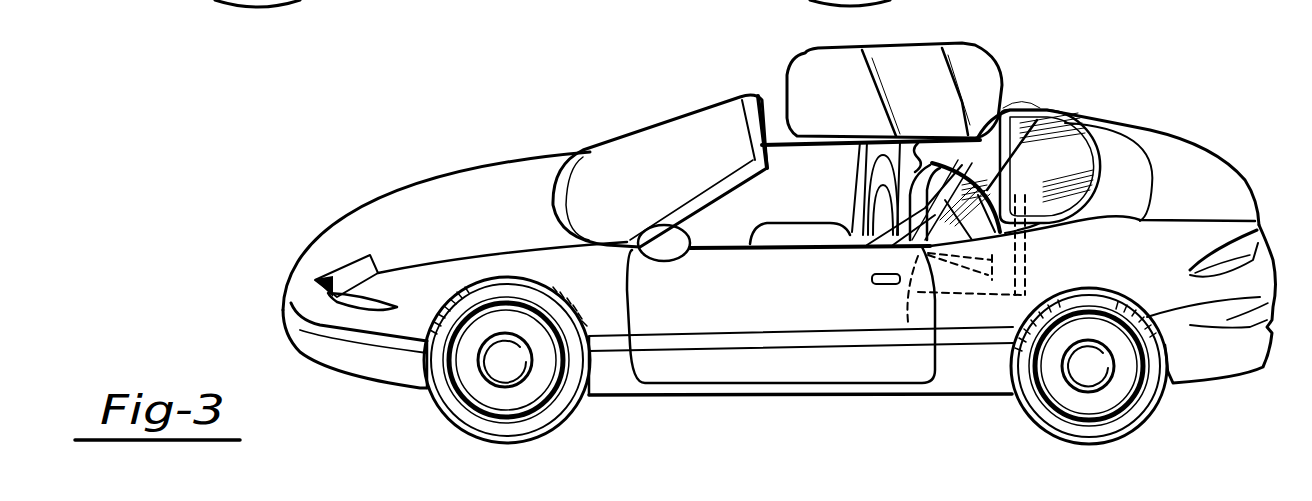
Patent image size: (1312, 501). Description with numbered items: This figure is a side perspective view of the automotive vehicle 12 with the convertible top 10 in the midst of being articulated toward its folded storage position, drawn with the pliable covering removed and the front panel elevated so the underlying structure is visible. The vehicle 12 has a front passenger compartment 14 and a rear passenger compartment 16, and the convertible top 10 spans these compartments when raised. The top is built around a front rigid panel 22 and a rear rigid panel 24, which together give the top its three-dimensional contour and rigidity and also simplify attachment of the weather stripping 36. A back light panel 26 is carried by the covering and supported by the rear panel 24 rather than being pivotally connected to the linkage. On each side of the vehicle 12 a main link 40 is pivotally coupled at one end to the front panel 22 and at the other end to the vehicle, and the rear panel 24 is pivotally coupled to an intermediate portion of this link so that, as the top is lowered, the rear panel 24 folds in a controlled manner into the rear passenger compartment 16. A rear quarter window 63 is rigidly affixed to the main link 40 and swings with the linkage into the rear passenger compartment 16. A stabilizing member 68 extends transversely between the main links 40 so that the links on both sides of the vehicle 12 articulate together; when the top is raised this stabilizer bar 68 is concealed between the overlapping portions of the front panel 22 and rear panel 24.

The convertible top 10 is at (1022, 86).
The automotive vehicle 12 is at (478, 154).
The front passenger compartment 14 is at (780, 236).
The rear passenger compartment 16 is at (973, 305).
The front rigid panel 22 is at (958, 72).
The rear rigid panel 24 is at (1070, 123).
The back light panel 26 is at (1043, 110).
The weather stripping 36 is at (820, 142).
The main link 40 is at (935, 200).
The rear quarter window 63 is at (993, 240).
The stabilizing member 68 is at (962, 142).